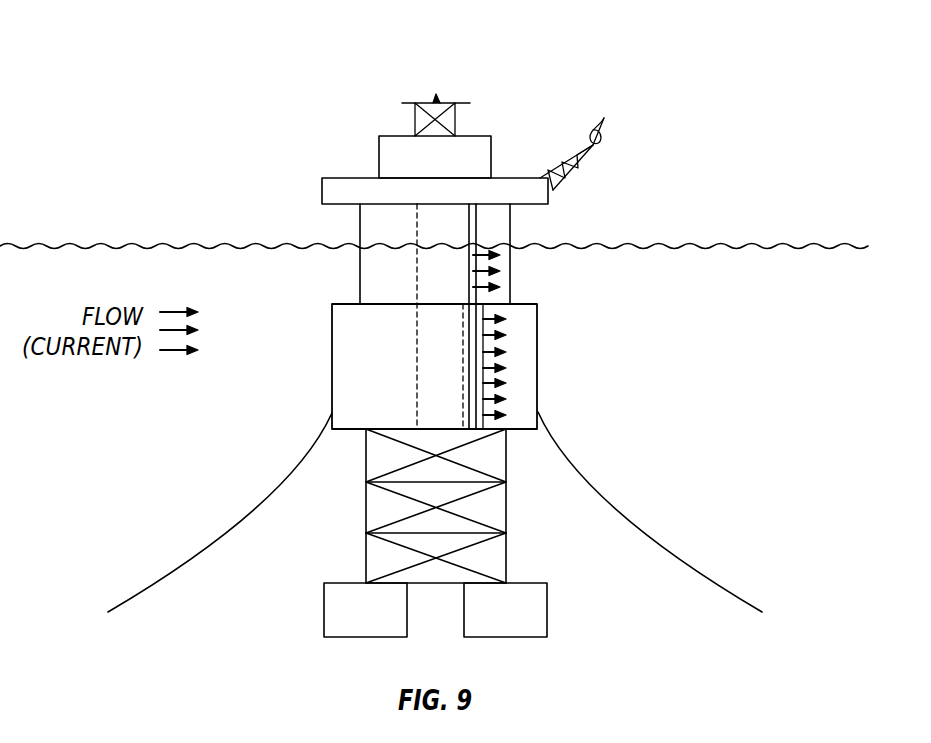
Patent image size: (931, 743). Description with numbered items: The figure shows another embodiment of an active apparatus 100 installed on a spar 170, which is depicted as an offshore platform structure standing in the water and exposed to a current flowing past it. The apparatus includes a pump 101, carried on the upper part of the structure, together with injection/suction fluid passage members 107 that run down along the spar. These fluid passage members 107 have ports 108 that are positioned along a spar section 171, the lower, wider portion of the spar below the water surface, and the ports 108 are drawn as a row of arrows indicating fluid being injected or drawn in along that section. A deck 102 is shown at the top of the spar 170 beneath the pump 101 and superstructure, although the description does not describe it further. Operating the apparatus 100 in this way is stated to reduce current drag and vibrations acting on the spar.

The active apparatus 100 is at (582, 60).
The pump 101 is at (490, 192).
The deck 102 is at (338, 190).
The injection/suction fluid passage members 107 is at (477, 243).
The ports 108 is at (476, 263).
The spar 170 is at (373, 262).
The spar section 171 is at (382, 347).